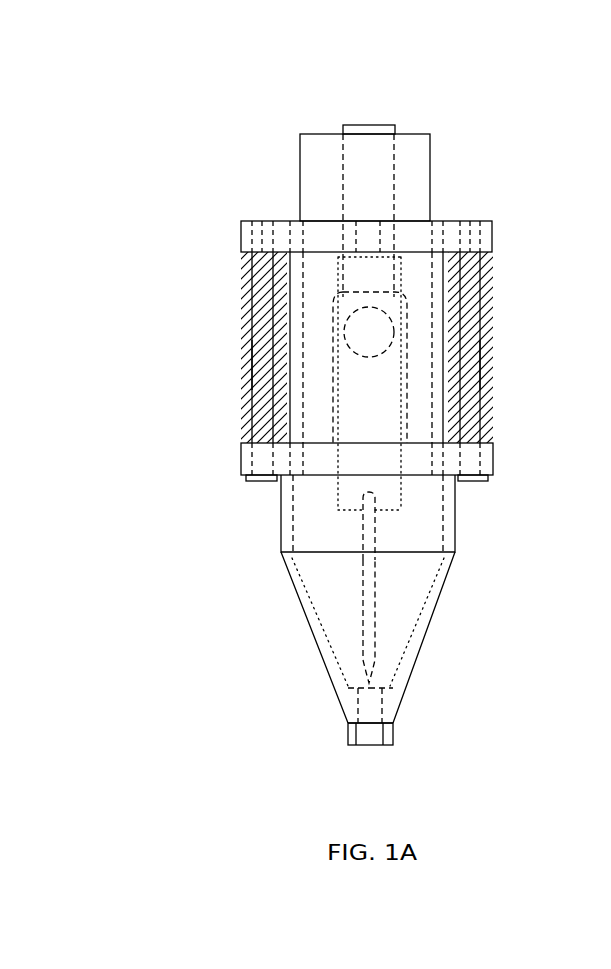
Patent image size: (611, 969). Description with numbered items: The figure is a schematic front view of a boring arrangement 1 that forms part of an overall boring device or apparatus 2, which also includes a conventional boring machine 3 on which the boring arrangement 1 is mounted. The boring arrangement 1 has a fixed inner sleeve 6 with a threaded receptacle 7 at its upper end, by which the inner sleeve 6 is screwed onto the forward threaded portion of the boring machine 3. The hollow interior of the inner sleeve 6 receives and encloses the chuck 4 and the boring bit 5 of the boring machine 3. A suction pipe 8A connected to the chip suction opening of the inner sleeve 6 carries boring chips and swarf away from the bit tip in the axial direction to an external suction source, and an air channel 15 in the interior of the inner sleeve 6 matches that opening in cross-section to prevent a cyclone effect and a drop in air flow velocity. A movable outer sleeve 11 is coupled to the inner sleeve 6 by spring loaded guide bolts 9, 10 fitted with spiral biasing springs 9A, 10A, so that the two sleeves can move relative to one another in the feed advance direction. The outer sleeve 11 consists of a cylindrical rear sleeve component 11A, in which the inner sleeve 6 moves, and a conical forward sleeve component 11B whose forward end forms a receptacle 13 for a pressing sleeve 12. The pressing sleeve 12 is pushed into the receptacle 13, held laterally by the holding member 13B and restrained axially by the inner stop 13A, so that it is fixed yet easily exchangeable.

The boring arrangement 1 is at (183, 456).
The boring device or apparatus 2 is at (150, 108).
The boring machine 3 is at (413, 150).
The chuck 4 is at (382, 497).
The boring bit 5 is at (373, 586).
The inner sleeve 6 is at (327, 273).
The threaded receptacle 7 is at (302, 240).
The suction pipe 8A is at (370, 160).
The guide bolt 9 is at (260, 322).
The spiral biasing spring 9A is at (250, 365).
The guide bolt 10 is at (483, 288).
The spiral biasing spring 10A is at (483, 365).
The outer sleeve 11 is at (328, 586).
The cylindrical rear sleeve component 11A is at (282, 530).
The conical forward sleeve component 11B is at (313, 642).
The pressing sleeve 12 is at (362, 732).
The receptacle 13 is at (395, 720).
The inner stop 13A is at (385, 686).
The holding member 13B is at (348, 708).
The air channel 15 is at (393, 485).